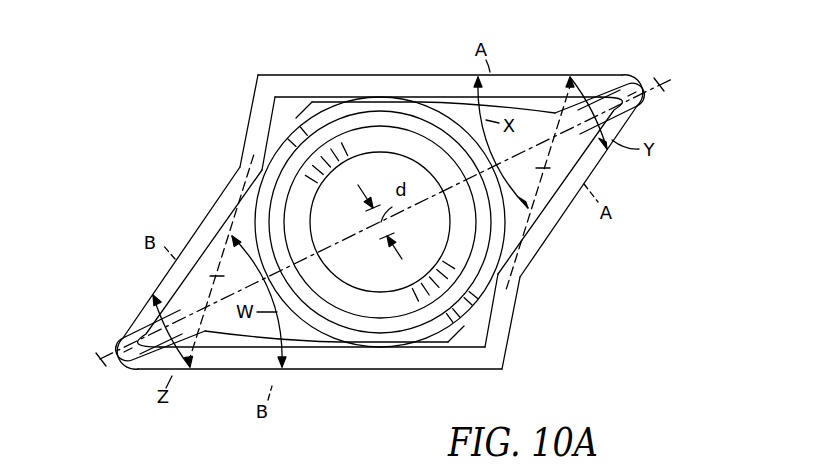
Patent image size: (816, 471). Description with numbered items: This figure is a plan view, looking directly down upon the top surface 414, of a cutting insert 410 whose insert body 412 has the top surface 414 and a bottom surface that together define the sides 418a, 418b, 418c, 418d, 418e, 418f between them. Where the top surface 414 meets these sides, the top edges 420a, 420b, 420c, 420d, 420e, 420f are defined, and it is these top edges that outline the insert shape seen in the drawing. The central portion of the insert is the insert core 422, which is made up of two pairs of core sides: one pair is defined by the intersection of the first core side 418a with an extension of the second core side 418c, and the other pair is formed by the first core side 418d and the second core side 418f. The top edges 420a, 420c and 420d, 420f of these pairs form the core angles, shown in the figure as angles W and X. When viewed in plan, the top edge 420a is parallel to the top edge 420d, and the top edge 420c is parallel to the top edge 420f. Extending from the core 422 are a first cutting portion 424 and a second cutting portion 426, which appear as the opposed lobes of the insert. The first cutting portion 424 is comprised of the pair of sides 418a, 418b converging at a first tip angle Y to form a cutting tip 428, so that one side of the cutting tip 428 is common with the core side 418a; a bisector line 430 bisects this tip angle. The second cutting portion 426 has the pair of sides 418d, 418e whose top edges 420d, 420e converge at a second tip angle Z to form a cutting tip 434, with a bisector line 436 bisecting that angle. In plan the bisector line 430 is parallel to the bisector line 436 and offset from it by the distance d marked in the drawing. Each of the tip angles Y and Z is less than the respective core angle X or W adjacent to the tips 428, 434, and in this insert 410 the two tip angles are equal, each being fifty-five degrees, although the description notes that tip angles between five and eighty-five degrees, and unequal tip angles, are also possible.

The cutting insert 410 is at (84, 126).
The insert body 412 is at (293, 104).
The top surface 414 is at (233, 207).
The first core side 418a is at (600, 73).
The side 418b is at (552, 228).
The second core side 418c is at (503, 346).
The first core side 418d is at (257, 370).
The side 418e is at (150, 286).
The second core side 418f is at (252, 110).
The top edge 420a is at (581, 74).
The top edge 420b is at (600, 172).
The top edge 420c is at (514, 306).
The top edge 420d is at (318, 372).
The top edge 420e is at (194, 230).
The top edge 420f is at (254, 91).
The insert core 422 is at (368, 312).
The first cutting portion 424 is at (624, 122).
The second cutting portion 426 is at (133, 328).
The cutting tip 428 is at (627, 76).
The bisector line 430 is at (662, 85).
The cutting tip 434 is at (140, 372).
The bisector line 436 is at (100, 359).